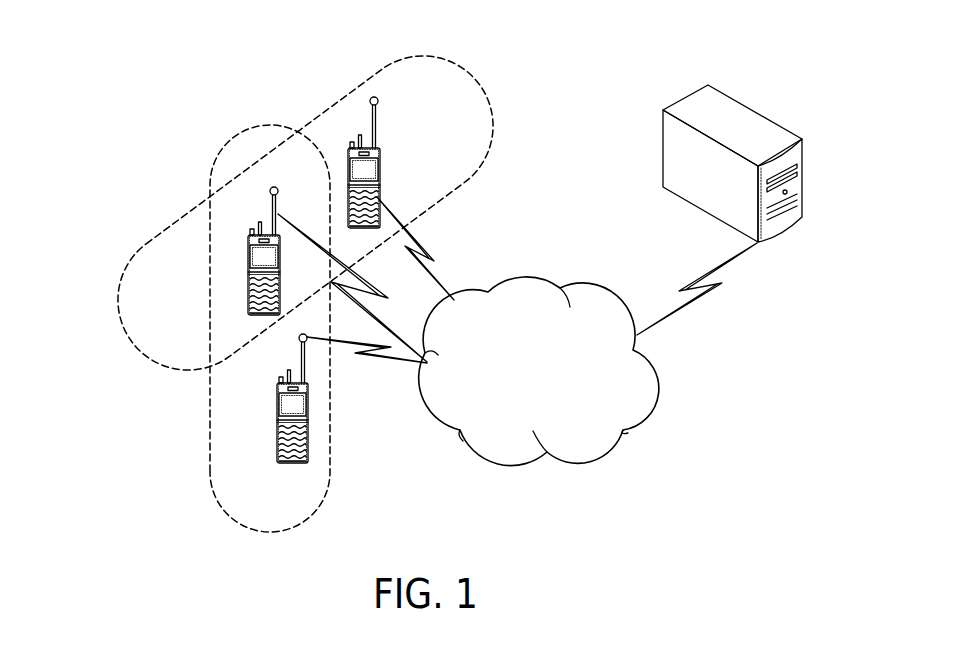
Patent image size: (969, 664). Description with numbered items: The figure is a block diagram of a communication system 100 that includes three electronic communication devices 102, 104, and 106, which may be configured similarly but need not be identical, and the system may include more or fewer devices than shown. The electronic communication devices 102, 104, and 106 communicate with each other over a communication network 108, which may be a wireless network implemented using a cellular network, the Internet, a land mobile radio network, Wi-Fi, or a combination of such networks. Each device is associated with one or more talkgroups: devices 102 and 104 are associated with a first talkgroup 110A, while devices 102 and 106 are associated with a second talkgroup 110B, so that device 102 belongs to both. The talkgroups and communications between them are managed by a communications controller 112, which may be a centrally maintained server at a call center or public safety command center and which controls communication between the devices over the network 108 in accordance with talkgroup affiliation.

The communication system 100 is at (141, 30).
The electronic communication device 102 is at (248, 289).
The electronic communication device 104 is at (277, 450).
The electronic communication device 106 is at (380, 165).
The communication network 108 is at (522, 278).
The first talkgroup 110A is at (210, 400).
The second talkgroup 110B is at (118, 296).
The communications controller 112 is at (663, 150).